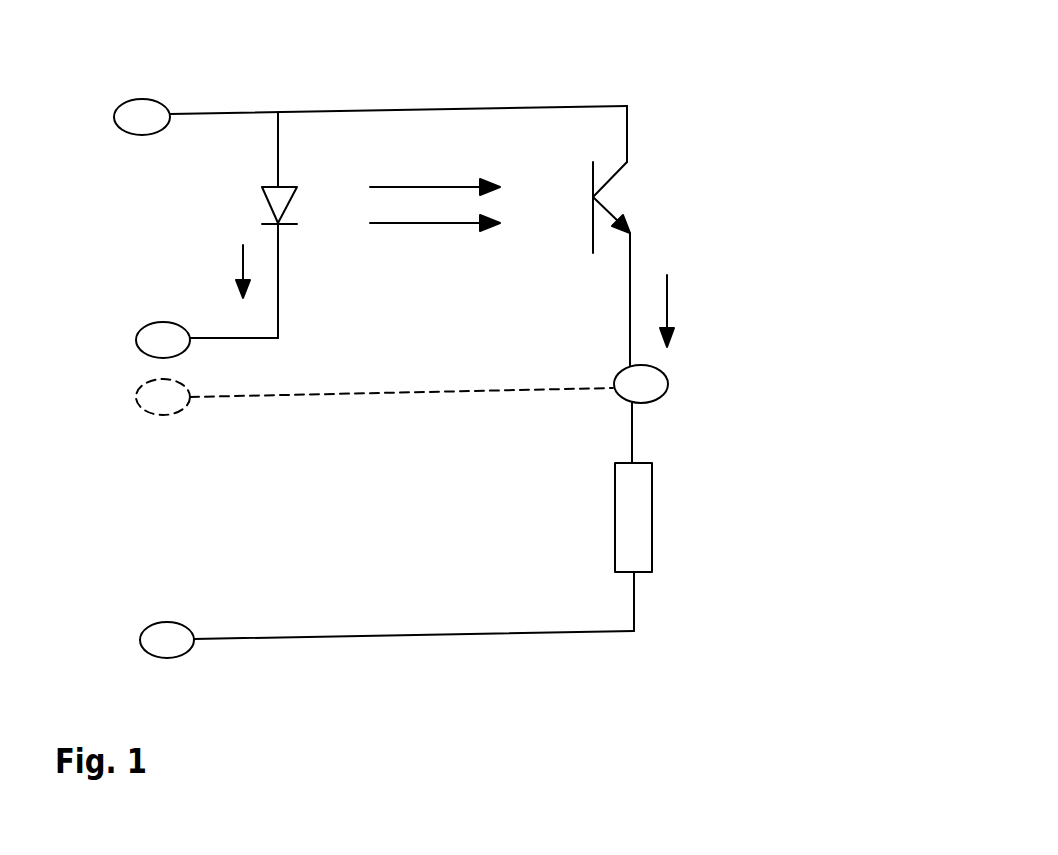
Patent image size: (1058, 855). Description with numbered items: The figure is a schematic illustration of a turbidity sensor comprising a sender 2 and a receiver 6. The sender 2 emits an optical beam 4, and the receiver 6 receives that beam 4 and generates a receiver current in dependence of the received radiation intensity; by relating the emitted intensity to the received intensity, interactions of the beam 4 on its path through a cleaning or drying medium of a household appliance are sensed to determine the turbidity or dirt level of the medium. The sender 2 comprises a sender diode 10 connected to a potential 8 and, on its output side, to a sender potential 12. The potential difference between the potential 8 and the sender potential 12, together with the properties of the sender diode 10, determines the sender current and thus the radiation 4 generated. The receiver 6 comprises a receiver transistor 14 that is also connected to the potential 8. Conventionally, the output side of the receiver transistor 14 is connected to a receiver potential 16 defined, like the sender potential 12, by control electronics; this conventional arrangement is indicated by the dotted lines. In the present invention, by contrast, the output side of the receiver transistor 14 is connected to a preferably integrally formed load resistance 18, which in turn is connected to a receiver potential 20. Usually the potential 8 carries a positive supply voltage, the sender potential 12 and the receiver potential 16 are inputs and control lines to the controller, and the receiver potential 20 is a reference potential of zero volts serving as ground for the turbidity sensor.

The sender 2 is at (148, 262).
The optical beam 4 is at (405, 230).
The receiver 6 is at (759, 227).
The potential 8 is at (143, 113).
The sender diode 10 is at (297, 207).
The sender potential 12 is at (175, 350).
The receiver transistor 14 is at (613, 190).
The receiver potential 16 is at (165, 405).
The load resistance 18 is at (638, 488).
The receiver potential 20 is at (168, 640).